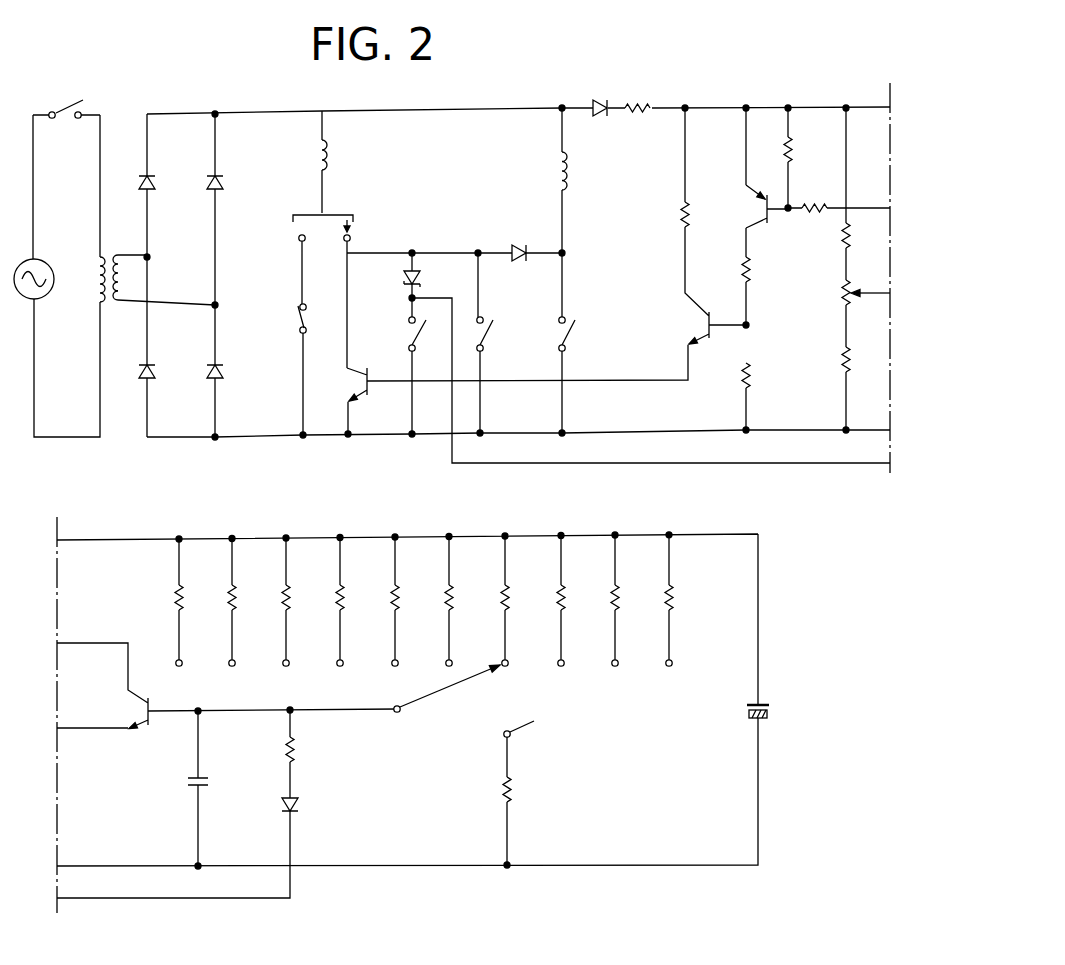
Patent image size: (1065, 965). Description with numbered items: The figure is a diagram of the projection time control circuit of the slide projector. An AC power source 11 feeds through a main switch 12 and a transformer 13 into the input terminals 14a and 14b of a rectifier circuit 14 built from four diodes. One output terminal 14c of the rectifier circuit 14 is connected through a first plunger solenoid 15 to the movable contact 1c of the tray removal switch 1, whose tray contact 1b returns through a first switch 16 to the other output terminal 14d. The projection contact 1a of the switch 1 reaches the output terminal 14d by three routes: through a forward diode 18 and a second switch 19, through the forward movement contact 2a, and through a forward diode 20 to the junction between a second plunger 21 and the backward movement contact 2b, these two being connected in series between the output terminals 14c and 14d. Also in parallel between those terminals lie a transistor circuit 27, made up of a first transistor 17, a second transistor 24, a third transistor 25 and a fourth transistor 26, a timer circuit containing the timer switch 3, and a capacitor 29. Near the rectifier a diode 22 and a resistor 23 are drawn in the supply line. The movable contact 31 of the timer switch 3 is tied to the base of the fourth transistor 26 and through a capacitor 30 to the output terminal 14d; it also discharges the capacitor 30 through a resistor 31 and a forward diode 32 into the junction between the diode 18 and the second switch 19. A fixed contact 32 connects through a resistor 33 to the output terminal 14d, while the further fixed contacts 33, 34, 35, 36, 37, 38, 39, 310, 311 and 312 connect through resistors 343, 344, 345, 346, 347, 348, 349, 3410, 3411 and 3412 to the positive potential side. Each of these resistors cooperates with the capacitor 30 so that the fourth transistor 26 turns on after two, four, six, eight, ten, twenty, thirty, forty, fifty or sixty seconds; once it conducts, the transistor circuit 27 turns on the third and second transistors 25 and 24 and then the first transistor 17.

The tray removal switch 1 is at (346, 199).
The projection contact 1a is at (350, 238).
The tray contact 1b is at (298, 238).
The movable contact 1c is at (355, 215).
The forward movement contact 2a is at (493, 335).
The backward movement contact 2b is at (576, 336).
The timer switch 3 is at (502, 700).
The AC power source 11 is at (44, 260).
The main switch 12 is at (65, 104).
The transformer 13 is at (112, 302).
The rectifier circuit 14 is at (192, 285).
The input terminal 14a is at (149, 255).
The input terminal 14b is at (218, 303).
The output terminal 14c is at (215, 112).
The output terminal 14d is at (215, 440).
The first plunger solenoid 15 is at (327, 152).
The first switch 16 is at (297, 324).
The first transistor 17 is at (363, 378).
The forward diode 18 is at (404, 277).
The second switch 19 is at (408, 321).
The forward diode 20 is at (516, 243).
The second plunger 21 is at (568, 170).
The diode 22 is at (600, 98).
The resistor 23 is at (638, 98).
The second transistor 24 is at (699, 319).
The third transistor 25 is at (762, 207).
The fourth transistor 26 is at (142, 712).
The transistor circuit 27 is at (761, 269).
The capacitor 29 is at (770, 709).
The capacitor 30 is at (210, 784).
The resistor 31 is at (300, 753).
The forward diode 32 is at (300, 806).
The resistor 33 is at (515, 790).
The fixed contact 34 is at (228, 661).
The fixed contact 35 is at (282, 661).
The fixed contact 36 is at (336, 661).
The fixed contact 37 is at (391, 661).
The fixed contact 38 is at (445, 661).
The fixed contact 39 is at (501, 661).
The fixed contact 310 is at (557, 661).
The fixed contact 311 is at (611, 661).
The fixed contact 312 is at (665, 661).
The resistor 343 is at (182, 590).
The resistor 344 is at (235, 590).
The resistor 345 is at (289, 590).
The resistor 346 is at (343, 590).
The resistor 347 is at (398, 590).
The resistor 348 is at (452, 590).
The resistor 349 is at (508, 590).
The resistor 3410 is at (564, 590).
The resistor 3411 is at (618, 590).
The resistor 3412 is at (672, 590).